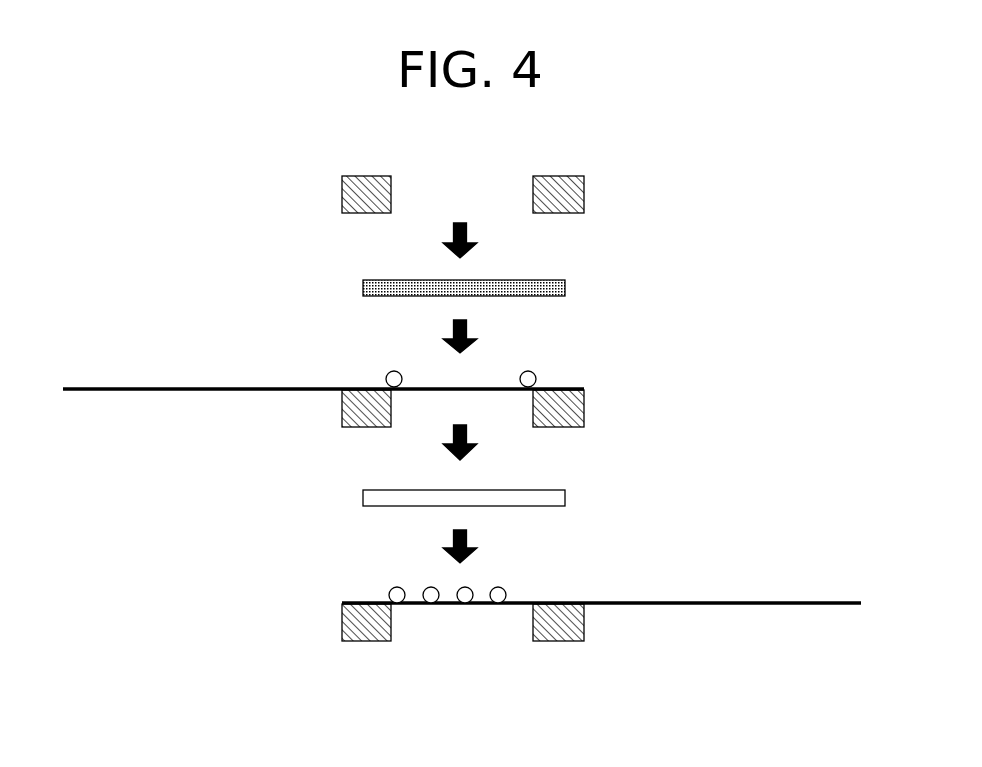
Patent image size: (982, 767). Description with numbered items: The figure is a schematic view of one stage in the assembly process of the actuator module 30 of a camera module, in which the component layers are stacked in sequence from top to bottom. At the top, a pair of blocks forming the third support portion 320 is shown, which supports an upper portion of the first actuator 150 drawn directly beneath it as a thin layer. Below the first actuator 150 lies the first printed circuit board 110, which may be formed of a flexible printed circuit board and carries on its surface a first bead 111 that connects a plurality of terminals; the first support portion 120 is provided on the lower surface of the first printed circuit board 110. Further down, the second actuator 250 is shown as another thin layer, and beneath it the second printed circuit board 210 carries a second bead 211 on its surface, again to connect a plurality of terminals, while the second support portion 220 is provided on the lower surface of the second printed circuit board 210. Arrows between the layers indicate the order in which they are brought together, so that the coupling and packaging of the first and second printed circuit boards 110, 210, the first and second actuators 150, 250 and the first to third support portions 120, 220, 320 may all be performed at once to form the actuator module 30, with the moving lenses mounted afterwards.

The actuator module 30 is at (138, 163).
The third support portion 320 is at (342, 212).
The first actuator 150 is at (565, 289).
The first printed circuit board 110 is at (98, 388).
The first bead 111 is at (535, 375).
The first support portion 120 is at (342, 424).
The second actuator 250 is at (565, 499).
The second printed circuit board 210 is at (805, 602).
The second bead 211 is at (505, 592).
The second support portion 220 is at (342, 629).